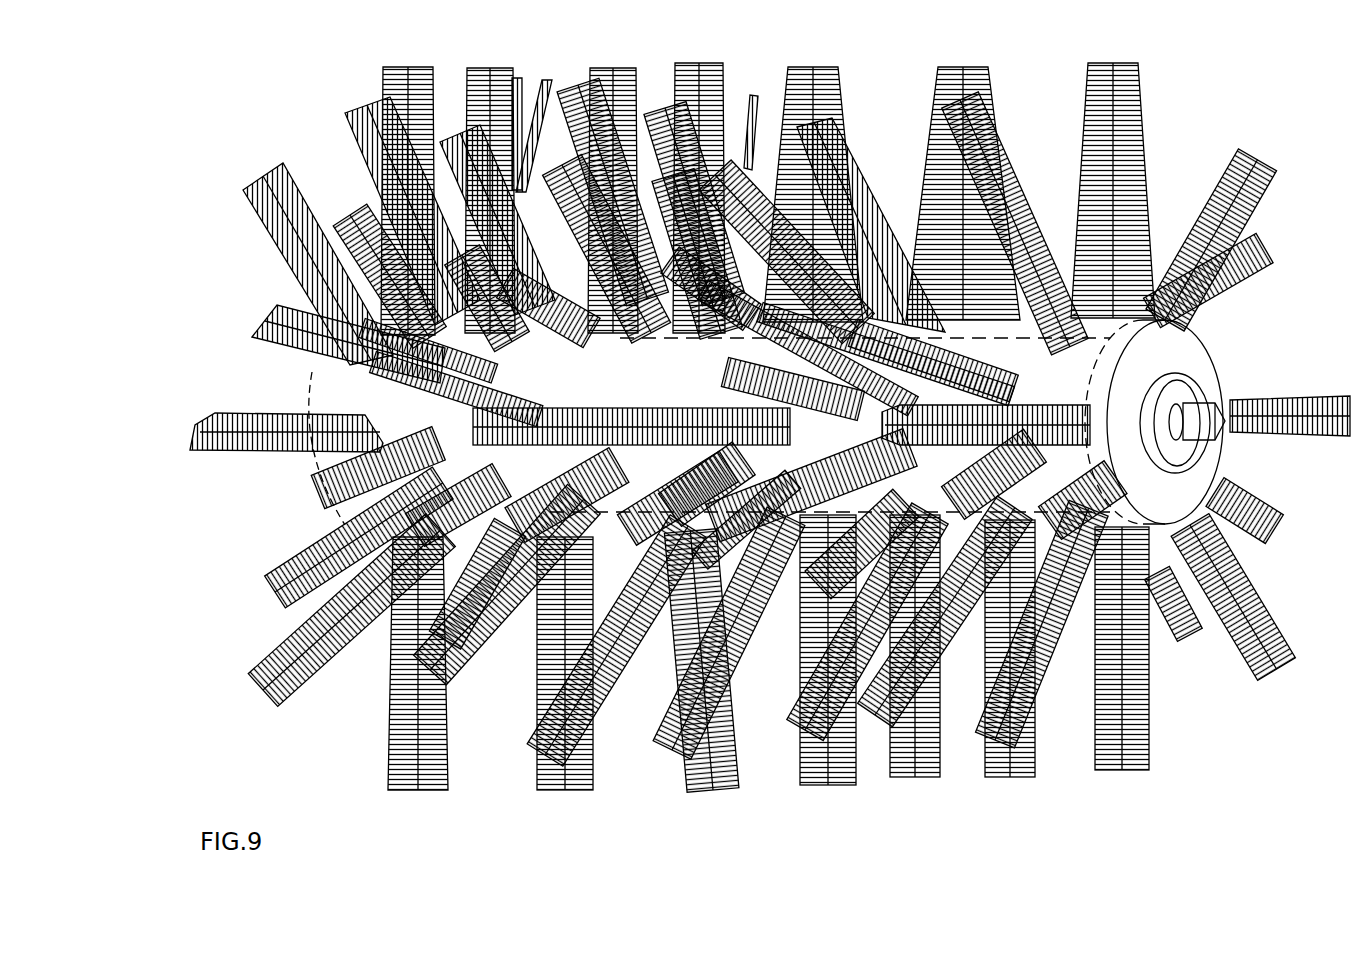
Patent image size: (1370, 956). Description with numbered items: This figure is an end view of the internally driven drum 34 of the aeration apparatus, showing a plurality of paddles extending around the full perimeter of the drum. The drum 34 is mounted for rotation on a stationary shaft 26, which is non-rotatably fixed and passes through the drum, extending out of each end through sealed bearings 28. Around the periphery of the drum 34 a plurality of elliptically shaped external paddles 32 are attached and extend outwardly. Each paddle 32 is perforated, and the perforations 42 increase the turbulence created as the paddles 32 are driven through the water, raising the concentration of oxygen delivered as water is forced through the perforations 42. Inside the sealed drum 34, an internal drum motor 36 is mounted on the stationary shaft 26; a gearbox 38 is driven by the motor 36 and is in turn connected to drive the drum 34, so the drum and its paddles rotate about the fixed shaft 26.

The stationary shaft 26 is at (1223, 433).
The sealed bearings 28 is at (1183, 390).
The elliptically shaped external paddles 32 is at (683, 767).
The internally driven drum 34 is at (303, 400).
The internal drum motor 36 is at (862, 322).
The gearbox 38 is at (1157, 360).
The perforations 42 is at (385, 622).